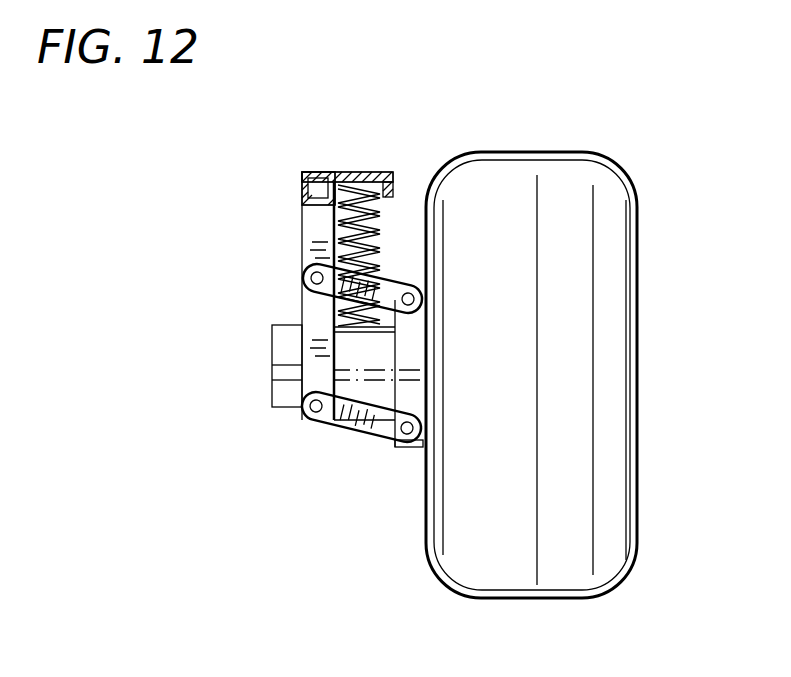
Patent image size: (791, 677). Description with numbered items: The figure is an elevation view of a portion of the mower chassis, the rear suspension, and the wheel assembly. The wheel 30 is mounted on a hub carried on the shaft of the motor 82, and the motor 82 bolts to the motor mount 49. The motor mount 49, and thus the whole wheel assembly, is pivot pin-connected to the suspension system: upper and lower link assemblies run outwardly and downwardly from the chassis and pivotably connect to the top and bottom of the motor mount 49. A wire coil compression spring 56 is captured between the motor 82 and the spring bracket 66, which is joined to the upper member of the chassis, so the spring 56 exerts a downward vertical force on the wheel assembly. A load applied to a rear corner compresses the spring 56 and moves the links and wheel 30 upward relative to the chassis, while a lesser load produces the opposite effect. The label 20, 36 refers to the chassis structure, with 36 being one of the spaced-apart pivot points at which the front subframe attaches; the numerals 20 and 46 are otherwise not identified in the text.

The wheel 30 is at (611, 166).
The frame 20 is at (315, 171).
The pivot point 36 is at (347, 188).
The spring bracket 66 is at (370, 172).
The support plate 46 is at (312, 313).
The spring 56 is at (333, 237).
The motor mount 49 is at (375, 400).
The motor 82 is at (272, 398).